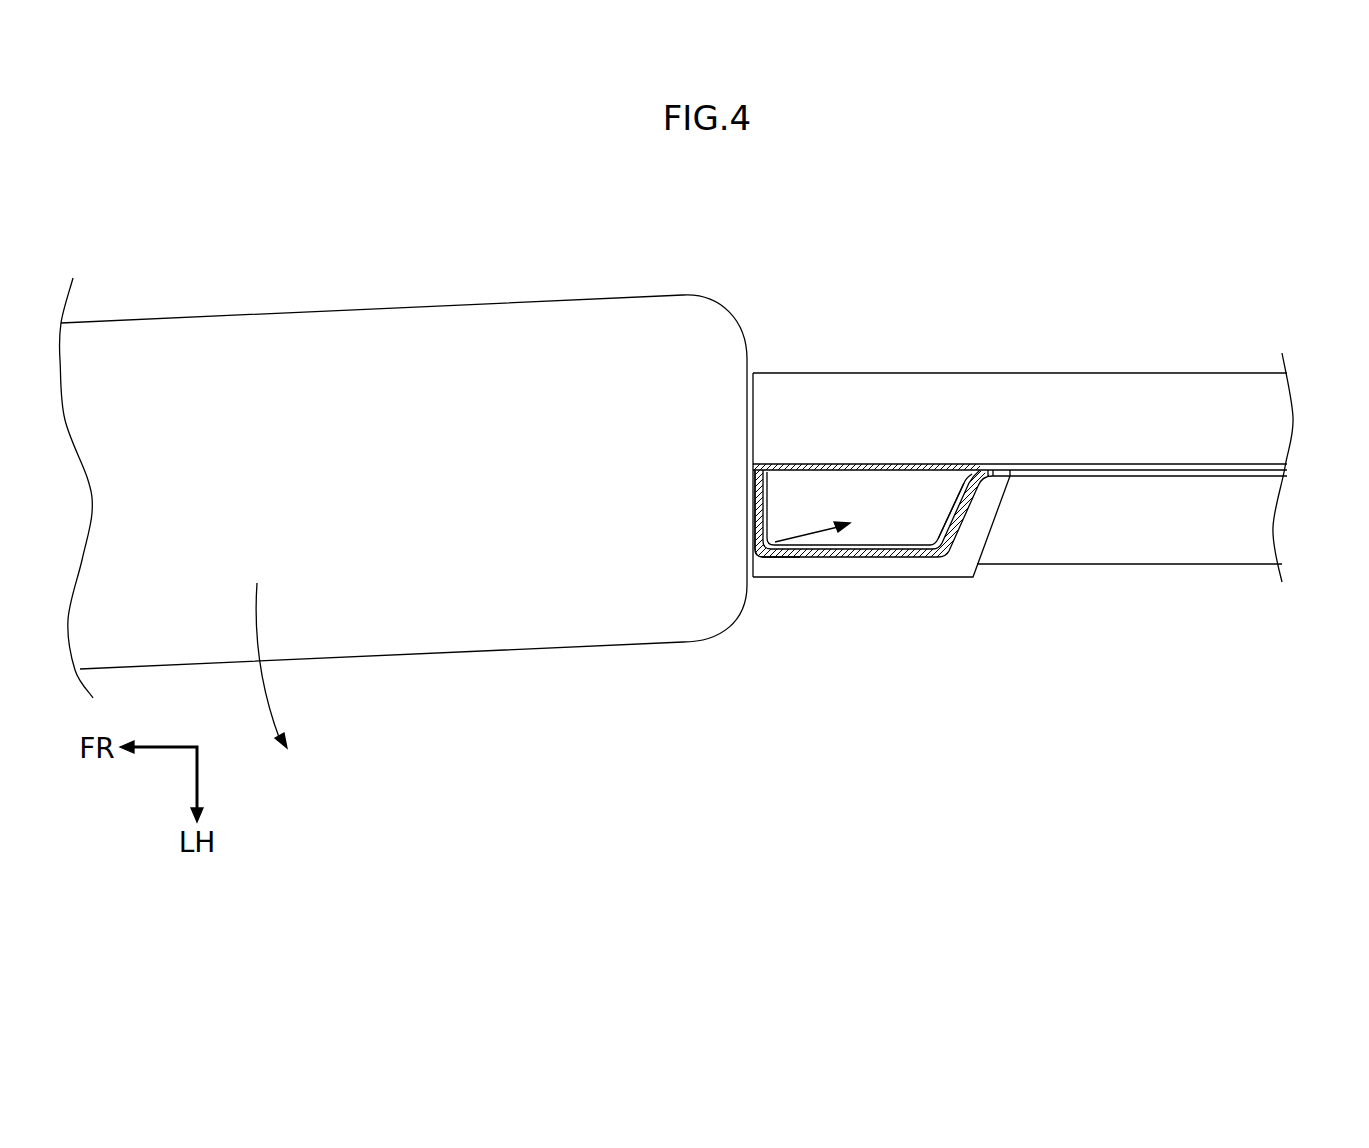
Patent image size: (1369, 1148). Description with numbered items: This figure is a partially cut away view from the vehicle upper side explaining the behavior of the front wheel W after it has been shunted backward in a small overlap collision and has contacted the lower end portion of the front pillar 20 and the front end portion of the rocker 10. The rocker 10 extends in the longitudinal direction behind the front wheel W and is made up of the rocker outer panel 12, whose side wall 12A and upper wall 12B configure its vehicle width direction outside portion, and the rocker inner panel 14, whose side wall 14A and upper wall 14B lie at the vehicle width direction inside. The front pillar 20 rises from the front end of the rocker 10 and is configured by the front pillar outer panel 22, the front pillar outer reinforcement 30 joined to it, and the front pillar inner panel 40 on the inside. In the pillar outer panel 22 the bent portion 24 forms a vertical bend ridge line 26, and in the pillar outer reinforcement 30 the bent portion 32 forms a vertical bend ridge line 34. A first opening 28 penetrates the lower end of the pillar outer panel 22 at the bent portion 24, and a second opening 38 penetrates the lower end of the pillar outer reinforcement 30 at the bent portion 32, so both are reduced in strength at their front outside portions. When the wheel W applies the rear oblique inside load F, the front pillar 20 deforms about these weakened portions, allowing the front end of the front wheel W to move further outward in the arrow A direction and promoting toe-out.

The front wheel W is at (525, 297).
The arrow A direction A is at (268, 693).
The rocker 10 is at (1061, 475).
The rocker outer panel 12 is at (1061, 565).
The side wall 12A is at (1128, 565).
The upper wall 12B is at (1253, 523).
The rocker inner panel 14 is at (1061, 438).
The side wall 14A is at (1218, 368).
The upper wall 14B is at (1272, 417).
The front pillar 20 is at (950, 535).
The front pillar outer panel 22 is at (1021, 566).
The bent portion 24 is at (751, 562).
The bend ridge line 26 is at (707, 576).
The first opening 28 is at (848, 552).
The front pillar outer reinforcement 30 is at (920, 540).
The bent portion 32 is at (754, 553).
The bend ridge line 34 is at (793, 512).
The second opening 38 is at (775, 542).
The front pillar inner panel 40 is at (967, 463).
The load F is at (813, 535).